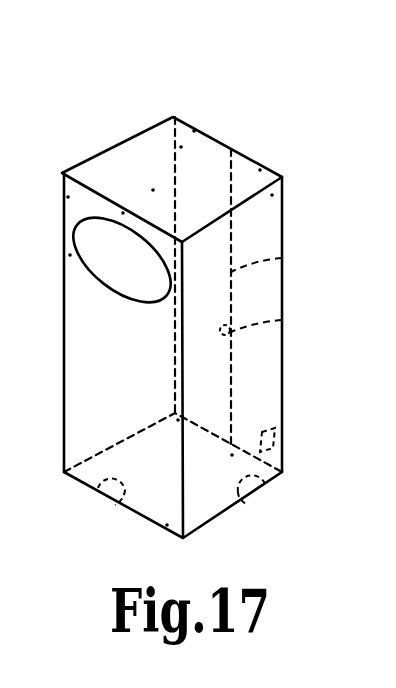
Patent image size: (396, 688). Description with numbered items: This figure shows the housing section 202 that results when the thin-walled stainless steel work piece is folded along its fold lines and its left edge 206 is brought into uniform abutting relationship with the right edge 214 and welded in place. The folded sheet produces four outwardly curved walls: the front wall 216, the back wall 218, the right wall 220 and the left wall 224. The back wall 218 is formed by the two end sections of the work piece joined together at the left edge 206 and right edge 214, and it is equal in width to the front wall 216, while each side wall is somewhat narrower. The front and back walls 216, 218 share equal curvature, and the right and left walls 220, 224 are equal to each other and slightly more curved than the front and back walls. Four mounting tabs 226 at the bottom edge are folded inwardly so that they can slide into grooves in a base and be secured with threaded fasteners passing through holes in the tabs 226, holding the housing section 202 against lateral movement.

The housing section 202 is at (96, 135).
The front wall 216 is at (80, 212).
The left wall 224 is at (143, 173).
The back wall 218 is at (201, 178).
The left edge 206 is at (282, 258).
The right edge 214 is at (282, 320).
The right wall 220 is at (275, 382).
The mounting tabs 226 is at (118, 503).